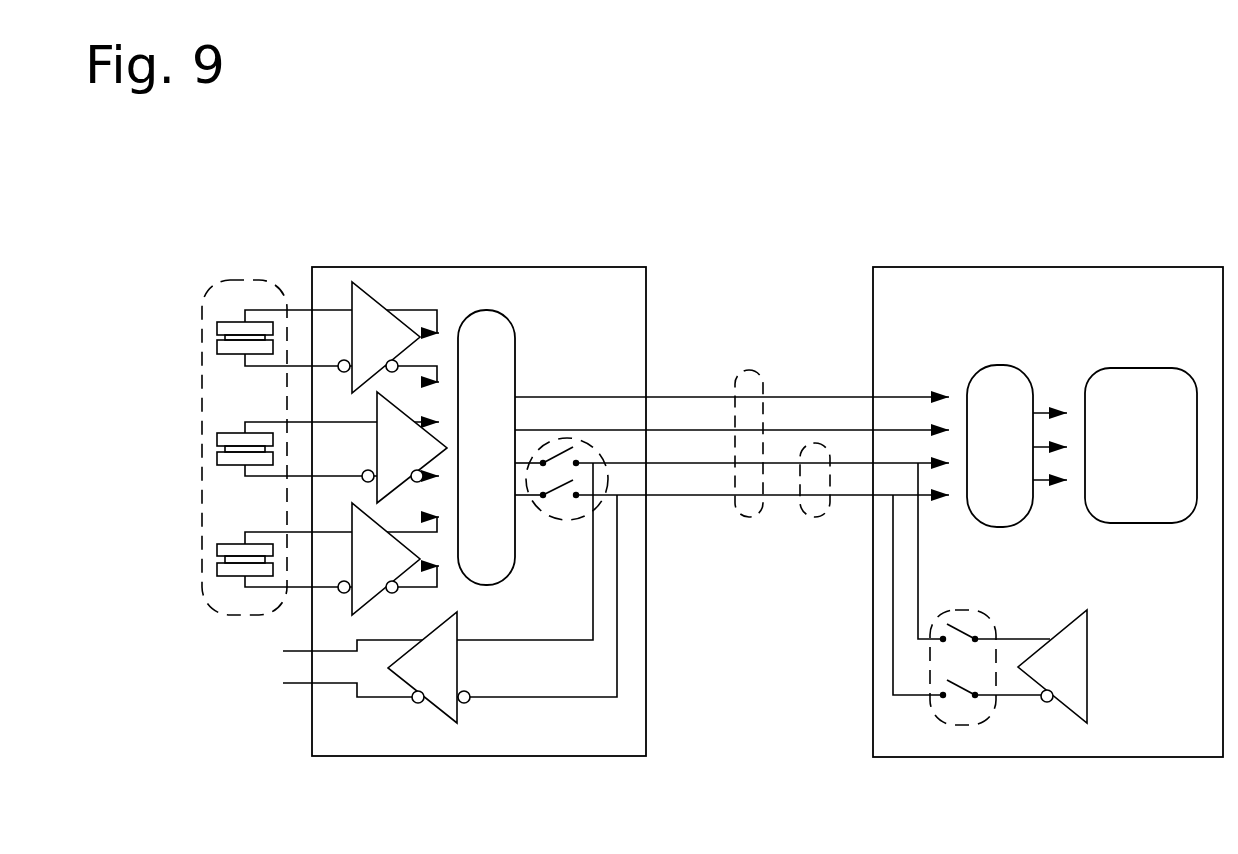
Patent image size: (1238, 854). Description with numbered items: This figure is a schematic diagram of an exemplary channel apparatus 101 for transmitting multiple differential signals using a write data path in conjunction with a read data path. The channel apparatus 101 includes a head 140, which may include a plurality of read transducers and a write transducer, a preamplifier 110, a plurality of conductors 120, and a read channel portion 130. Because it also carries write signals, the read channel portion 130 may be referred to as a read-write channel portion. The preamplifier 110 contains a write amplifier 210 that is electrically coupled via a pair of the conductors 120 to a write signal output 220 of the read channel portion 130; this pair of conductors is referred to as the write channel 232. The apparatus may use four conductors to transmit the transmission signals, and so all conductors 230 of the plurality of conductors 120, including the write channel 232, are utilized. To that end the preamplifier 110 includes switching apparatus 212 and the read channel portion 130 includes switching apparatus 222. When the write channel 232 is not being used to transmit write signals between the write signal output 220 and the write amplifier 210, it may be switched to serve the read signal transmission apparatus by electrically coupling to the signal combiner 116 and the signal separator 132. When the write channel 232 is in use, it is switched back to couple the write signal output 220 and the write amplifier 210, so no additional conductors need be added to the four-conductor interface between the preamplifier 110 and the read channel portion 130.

The channel apparatus 101 is at (166, 190).
The preamplifier 110 is at (419, 258).
The signal combiner 116 is at (488, 308).
The plurality of conductors 120 is at (740, 340).
The read channel portion 130 is at (1054, 258).
The signal separator 132 is at (993, 363).
The head 140 is at (232, 278).
The write amplifier 210 is at (431, 712).
The switching apparatus 212 is at (595, 513).
The write signal output 220 is at (1062, 720).
The switching apparatus 222 is at (936, 716).
The conductors 230 is at (752, 521).
The write channel 232 is at (816, 521).